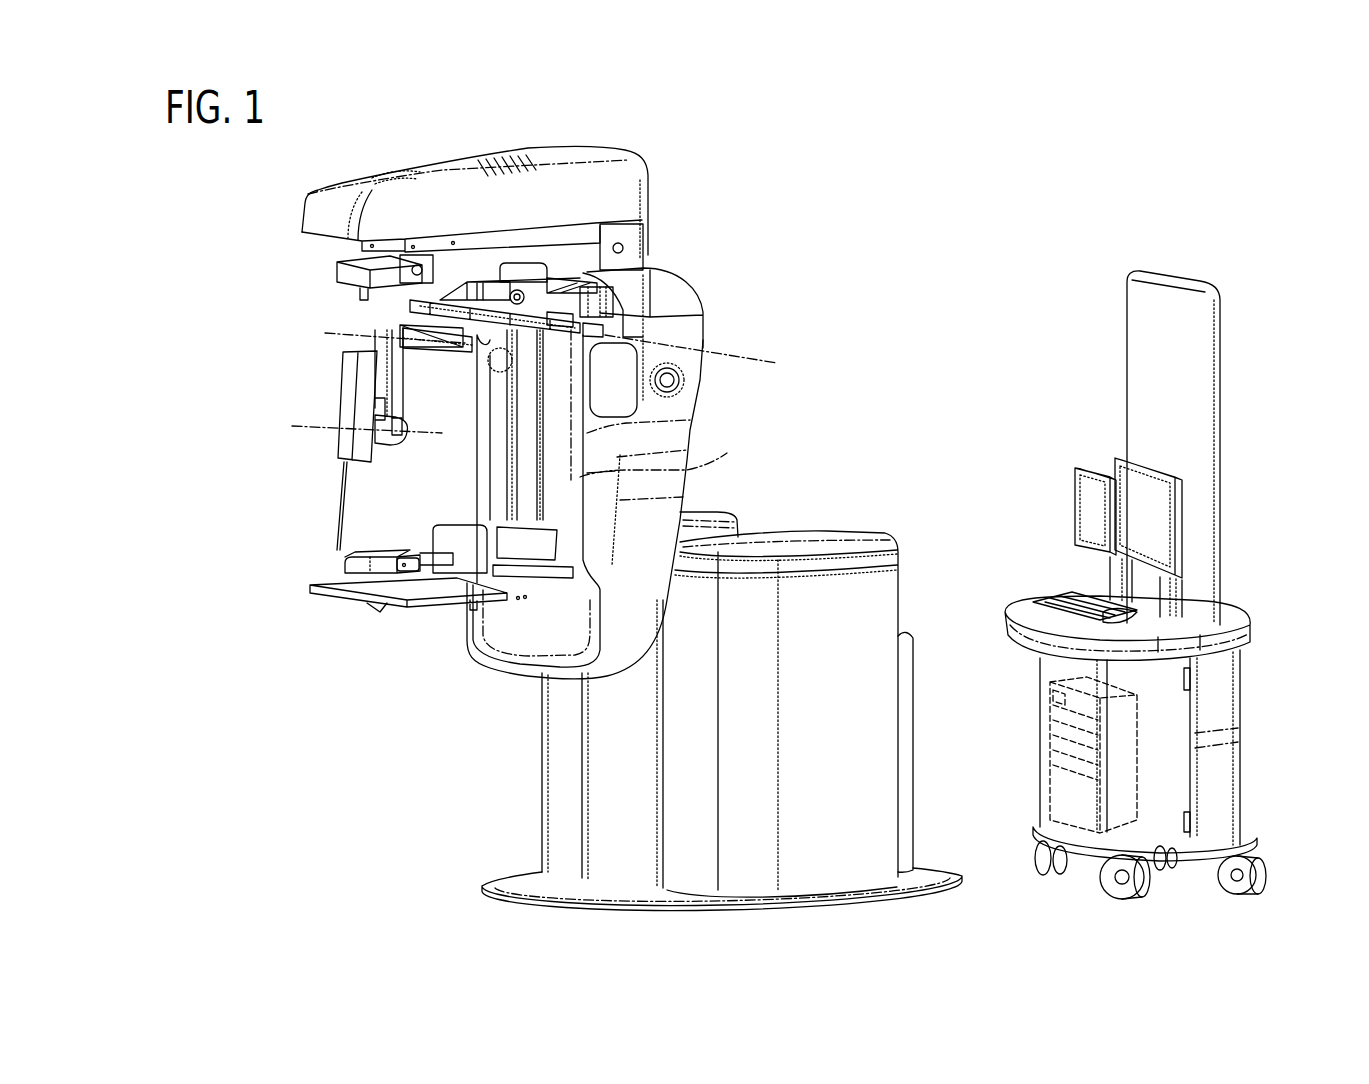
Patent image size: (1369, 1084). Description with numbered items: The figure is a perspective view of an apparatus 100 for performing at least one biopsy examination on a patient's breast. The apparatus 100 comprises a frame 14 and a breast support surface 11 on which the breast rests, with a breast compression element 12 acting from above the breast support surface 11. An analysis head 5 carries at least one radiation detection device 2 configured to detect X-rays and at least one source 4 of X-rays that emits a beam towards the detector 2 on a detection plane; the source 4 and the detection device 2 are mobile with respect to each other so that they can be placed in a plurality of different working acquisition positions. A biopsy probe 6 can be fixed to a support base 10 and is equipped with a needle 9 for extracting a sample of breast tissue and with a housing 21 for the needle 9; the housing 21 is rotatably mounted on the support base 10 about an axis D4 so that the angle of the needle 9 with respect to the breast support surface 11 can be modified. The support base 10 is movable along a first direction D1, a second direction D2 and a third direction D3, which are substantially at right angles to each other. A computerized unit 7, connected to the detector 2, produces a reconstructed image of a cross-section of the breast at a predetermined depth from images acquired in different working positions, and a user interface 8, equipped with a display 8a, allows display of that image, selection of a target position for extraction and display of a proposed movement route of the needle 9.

The apparatus 100 is at (618, 125).
The frame 14 is at (688, 280).
The analysis head 5 is at (326, 415).
The source of X-rays 4 is at (350, 292).
The radiation detection device 2 is at (326, 578).
The biopsy probe 6 is at (287, 450).
The housing 21 is at (338, 396).
The needle 9 is at (335, 527).
The support base 10 is at (379, 452).
The breast support surface 11 is at (414, 589).
The breast compression element 12 is at (359, 582).
The computerized unit 7 is at (1063, 793).
The user interface 8 is at (1103, 526).
The display 8a is at (1065, 495).
The first direction D1 is at (741, 352).
The second direction D2 is at (340, 334).
The third direction D3 is at (690, 464).
The axis D4 is at (305, 427).